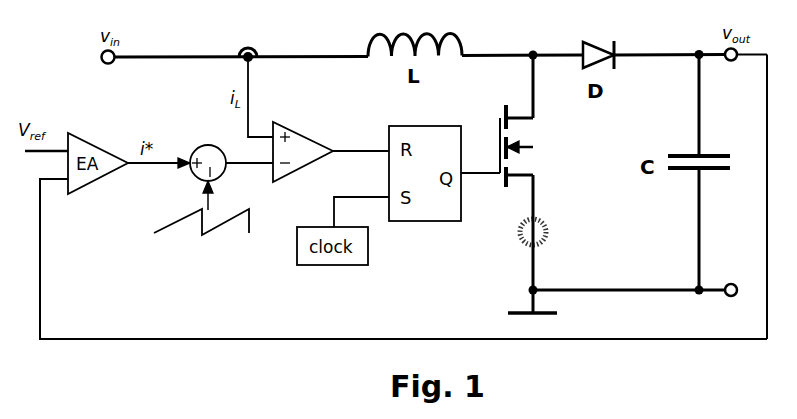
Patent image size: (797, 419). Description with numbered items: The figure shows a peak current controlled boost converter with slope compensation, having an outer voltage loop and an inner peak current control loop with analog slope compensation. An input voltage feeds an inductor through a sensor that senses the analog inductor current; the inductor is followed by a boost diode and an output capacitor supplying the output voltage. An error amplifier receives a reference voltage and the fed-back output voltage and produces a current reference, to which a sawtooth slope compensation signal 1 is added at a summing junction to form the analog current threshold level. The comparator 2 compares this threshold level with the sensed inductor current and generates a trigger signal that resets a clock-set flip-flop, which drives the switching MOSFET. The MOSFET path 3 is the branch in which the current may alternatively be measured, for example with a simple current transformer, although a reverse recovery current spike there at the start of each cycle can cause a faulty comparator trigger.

The sawtooth ramp signal 1 is at (194, 236).
The comparator 2 is at (303, 130).
The MOSFET path 3 is at (556, 230).